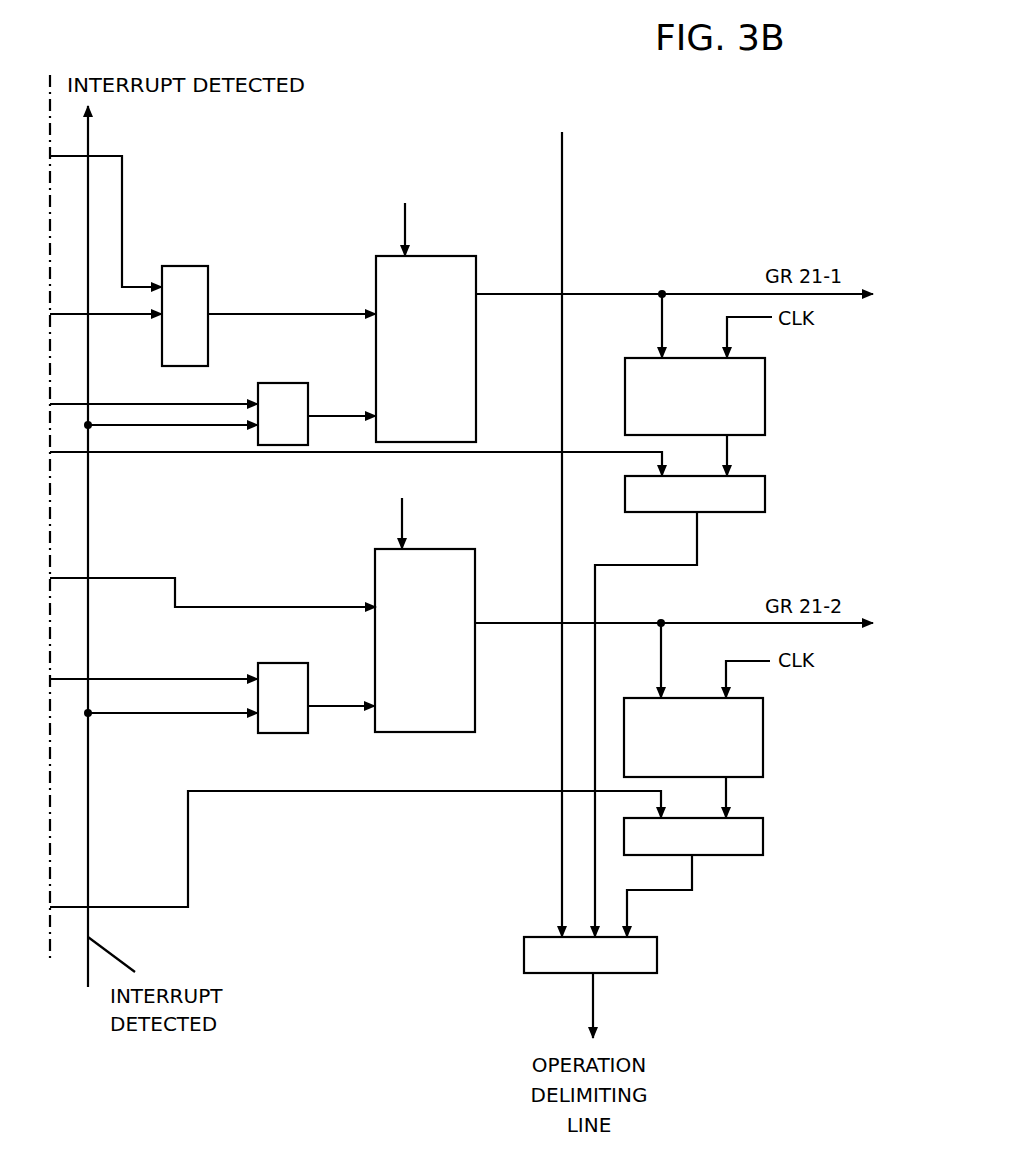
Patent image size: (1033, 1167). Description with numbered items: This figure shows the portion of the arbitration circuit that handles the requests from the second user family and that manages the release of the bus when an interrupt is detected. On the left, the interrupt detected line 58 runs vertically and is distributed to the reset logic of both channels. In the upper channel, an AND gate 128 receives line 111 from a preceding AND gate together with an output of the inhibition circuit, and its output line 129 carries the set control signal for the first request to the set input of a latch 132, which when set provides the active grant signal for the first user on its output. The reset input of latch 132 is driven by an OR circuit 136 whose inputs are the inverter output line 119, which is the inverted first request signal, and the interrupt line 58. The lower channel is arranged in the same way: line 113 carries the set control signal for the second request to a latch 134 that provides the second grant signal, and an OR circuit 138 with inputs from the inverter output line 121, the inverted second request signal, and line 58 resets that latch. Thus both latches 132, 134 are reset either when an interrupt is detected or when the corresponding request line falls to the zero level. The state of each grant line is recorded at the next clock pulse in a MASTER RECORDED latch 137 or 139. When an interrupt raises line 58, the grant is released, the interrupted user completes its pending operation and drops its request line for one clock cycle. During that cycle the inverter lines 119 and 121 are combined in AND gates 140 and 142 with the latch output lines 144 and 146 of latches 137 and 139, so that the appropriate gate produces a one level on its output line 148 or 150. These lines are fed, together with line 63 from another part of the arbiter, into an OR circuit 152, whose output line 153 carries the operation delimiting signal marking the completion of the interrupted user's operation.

The interrupt detected line 58 is at (90, 140).
The operation delimiting input line 63 is at (562, 203).
The AND gate output line 111 is at (122, 318).
The request input line RQ 20-2 113 is at (135, 577).
The inverter output line 119 is at (215, 402).
The inverter output line 121 is at (143, 678).
The AND gate 128 is at (193, 265).
The AND gate output line 129 is at (327, 315).
The latch 132 is at (450, 255).
The latch 134 is at (448, 547).
The OR circuit 136 is at (292, 382).
The MASTER RECORDED latch 137 is at (767, 383).
The OR circuit 138 is at (277, 663).
The MASTER RECORDED latch 139 is at (765, 722).
The AND gate 140 is at (767, 497).
The AND gate 142 is at (765, 838).
The latch output line 144 is at (728, 453).
The latch output line 146 is at (727, 797).
The AND gate output line 148 is at (697, 542).
The AND gate output line 150 is at (692, 873).
The OR circuit 152 is at (658, 953).
The operation delimiting output line 153 is at (593, 1017).